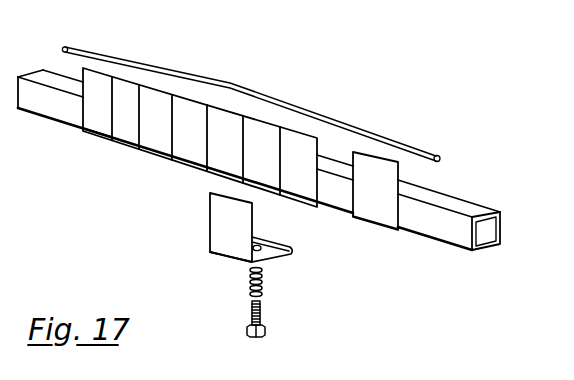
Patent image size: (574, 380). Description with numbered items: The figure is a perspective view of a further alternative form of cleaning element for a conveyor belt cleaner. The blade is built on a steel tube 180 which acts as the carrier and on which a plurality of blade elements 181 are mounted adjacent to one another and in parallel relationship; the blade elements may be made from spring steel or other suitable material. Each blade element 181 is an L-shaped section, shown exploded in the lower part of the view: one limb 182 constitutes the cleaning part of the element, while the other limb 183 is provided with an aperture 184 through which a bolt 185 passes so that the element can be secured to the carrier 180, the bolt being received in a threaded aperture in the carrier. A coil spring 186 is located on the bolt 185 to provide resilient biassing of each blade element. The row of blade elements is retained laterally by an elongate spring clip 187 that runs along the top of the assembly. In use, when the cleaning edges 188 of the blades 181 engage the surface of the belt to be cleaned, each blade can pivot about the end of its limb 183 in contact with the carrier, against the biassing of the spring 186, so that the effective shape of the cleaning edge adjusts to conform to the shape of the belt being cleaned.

The steel tube 180 is at (503, 233).
The blade element 181 is at (88, 131).
The limb 182 is at (210, 233).
The limb 183 is at (291, 255).
The aperture 184 is at (260, 243).
The bolt 185 is at (264, 332).
The coil spring 186 is at (263, 290).
The elongate spring clip 187 is at (418, 151).
The cleaning edge 188 is at (99, 67).